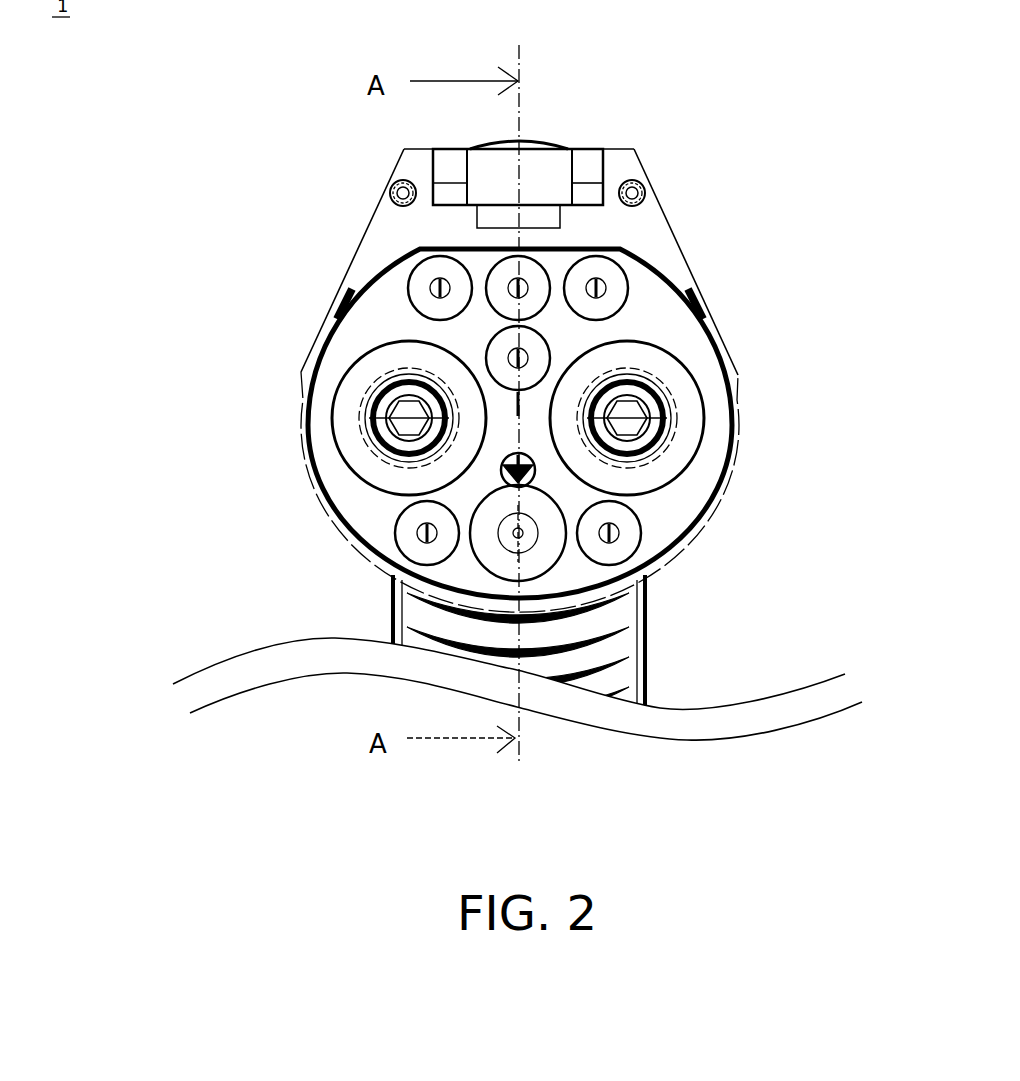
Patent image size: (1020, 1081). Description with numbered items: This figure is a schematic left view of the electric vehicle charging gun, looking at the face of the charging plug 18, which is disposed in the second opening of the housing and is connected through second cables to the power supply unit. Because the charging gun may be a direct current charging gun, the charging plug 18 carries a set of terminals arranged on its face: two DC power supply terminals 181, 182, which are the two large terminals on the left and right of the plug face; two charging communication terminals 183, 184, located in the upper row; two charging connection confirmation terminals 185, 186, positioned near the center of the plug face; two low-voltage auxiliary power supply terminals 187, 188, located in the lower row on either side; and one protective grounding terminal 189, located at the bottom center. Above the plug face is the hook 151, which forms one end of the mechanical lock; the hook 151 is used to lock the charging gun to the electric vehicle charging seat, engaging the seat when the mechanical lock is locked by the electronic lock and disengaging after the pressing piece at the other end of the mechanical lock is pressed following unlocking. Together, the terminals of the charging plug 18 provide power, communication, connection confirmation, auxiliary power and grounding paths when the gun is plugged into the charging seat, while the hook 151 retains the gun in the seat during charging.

The charging plug 18 is at (650, 214).
The hook 151 is at (540, 220).
The DC power supply terminal 181 is at (372, 418).
The DC power supply terminal 182 is at (682, 408).
The charging communication terminal 183 is at (432, 288).
The charging communication terminal 184 is at (608, 287).
The charging connection confirmation terminal 185 is at (530, 360).
The charging connection confirmation terminal 186 is at (507, 287).
The low-voltage auxiliary power supply terminal 187 is at (418, 535).
The low-voltage auxiliary power supply terminal 188 is at (617, 530).
The protective grounding terminal 189 is at (530, 540).